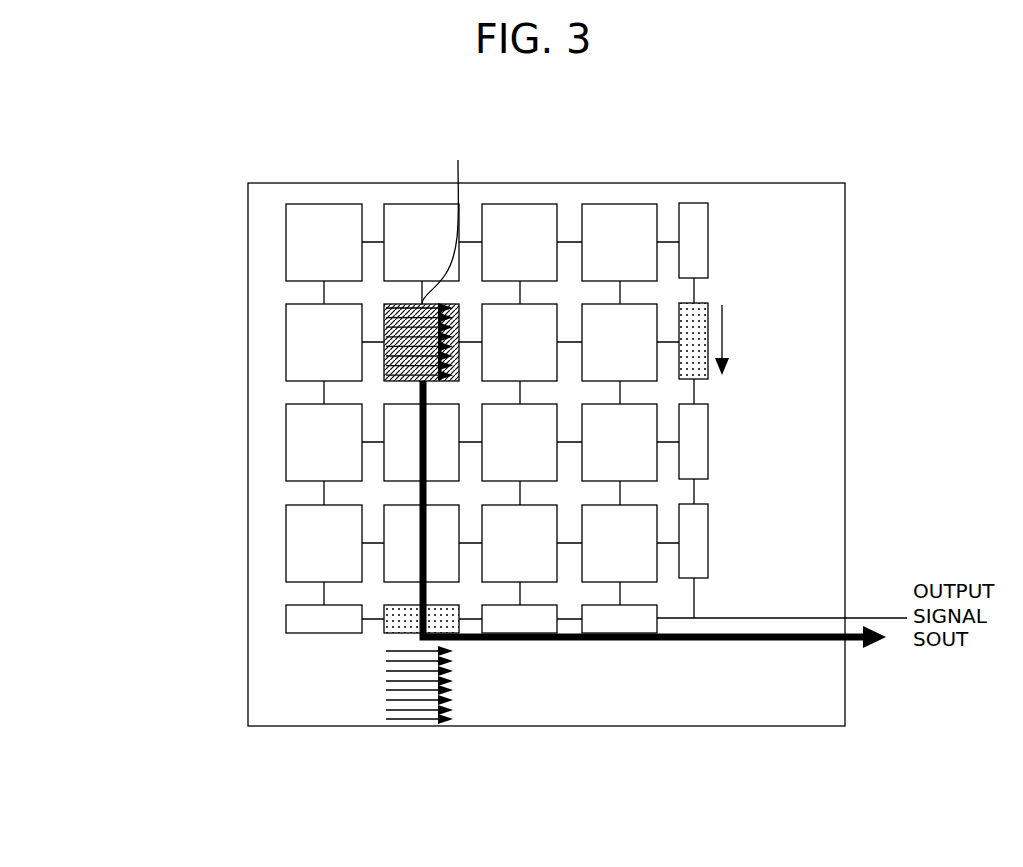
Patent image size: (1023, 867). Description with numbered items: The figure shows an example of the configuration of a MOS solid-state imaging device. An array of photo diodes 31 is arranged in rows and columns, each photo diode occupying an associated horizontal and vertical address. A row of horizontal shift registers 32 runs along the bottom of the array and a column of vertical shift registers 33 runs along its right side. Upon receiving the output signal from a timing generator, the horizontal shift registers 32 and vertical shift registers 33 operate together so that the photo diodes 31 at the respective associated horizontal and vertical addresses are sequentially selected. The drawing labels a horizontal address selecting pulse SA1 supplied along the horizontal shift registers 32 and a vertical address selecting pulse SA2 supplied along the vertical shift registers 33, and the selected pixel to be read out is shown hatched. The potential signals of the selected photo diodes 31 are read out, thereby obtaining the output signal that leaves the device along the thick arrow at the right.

The photo diode 31 is at (316, 204).
The horizontal shift register 32 is at (286, 621).
The vertical shift register 33 is at (709, 224).
The horizontal address selecting pulse SA1 is at (408, 720).
The vertical address selecting pulse SA2 is at (722, 343).